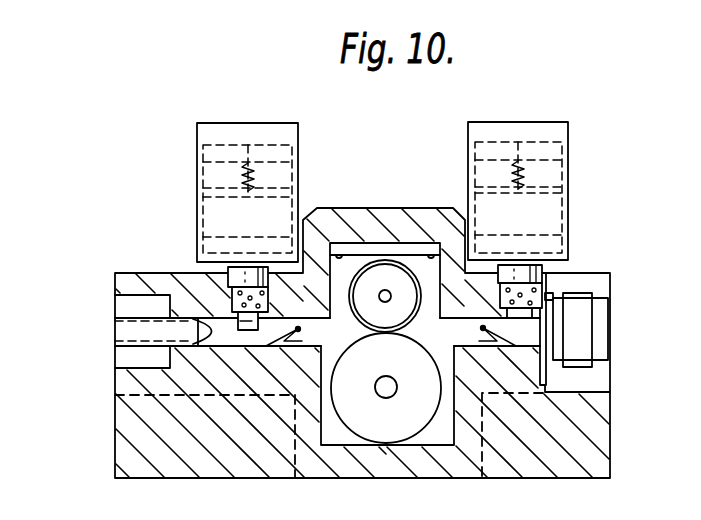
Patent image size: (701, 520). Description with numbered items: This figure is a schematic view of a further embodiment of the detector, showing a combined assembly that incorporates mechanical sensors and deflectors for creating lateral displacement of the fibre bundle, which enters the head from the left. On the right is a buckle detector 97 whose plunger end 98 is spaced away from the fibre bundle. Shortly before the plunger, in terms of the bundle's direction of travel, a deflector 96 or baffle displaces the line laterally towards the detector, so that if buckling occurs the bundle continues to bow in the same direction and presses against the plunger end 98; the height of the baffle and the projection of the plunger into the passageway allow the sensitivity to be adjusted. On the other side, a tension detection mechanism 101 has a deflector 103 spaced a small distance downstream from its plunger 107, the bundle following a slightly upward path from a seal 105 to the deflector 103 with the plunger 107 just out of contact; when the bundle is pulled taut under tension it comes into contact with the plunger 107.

The deflector 96 is at (489, 334).
The buckle detector 97 is at (539, 122).
The plunger end 98 is at (552, 297).
The tension detection mechanism 101 is at (250, 123).
The deflector 103 is at (296, 343).
The seal 105 is at (195, 326).
The plunger 107 is at (232, 322).